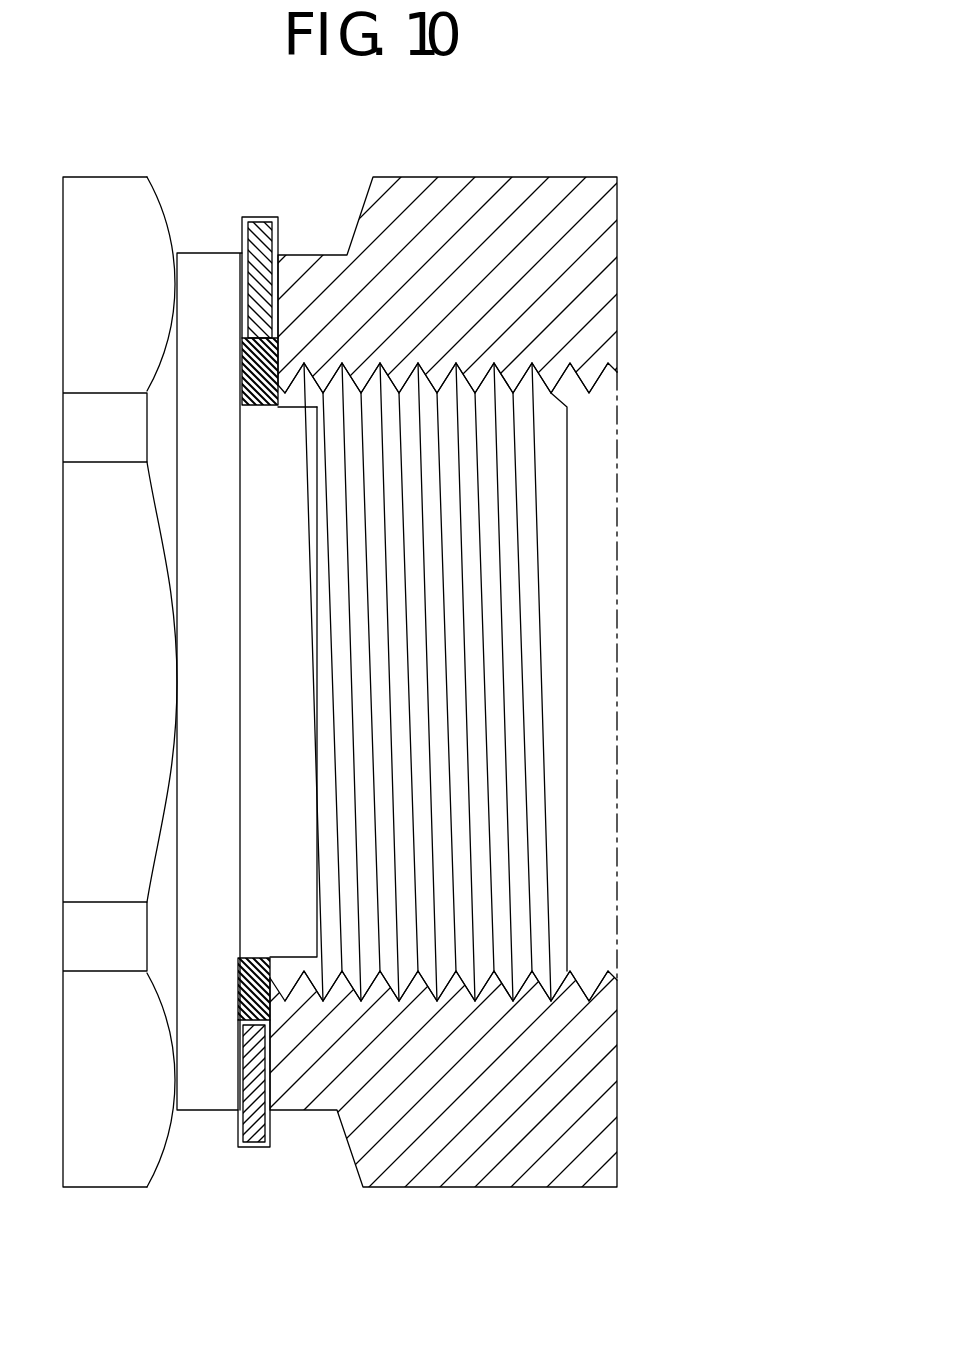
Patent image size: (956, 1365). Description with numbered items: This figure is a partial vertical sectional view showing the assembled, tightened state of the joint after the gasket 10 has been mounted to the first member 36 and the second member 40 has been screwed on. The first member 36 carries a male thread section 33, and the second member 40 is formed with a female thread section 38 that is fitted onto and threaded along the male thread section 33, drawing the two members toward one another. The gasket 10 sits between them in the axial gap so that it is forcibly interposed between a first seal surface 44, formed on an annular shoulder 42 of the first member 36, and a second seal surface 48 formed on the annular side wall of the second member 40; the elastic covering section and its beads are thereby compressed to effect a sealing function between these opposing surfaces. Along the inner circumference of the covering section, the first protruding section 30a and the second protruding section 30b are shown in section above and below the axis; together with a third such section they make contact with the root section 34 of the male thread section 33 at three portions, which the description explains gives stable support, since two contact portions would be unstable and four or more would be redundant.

The gasket 10 is at (281, 231).
The first protruding section 30a is at (278, 362).
The second protruding section 30b is at (252, 958).
The male thread section 33 is at (475, 1005).
The root section 34 is at (303, 404).
The first member 36 is at (101, 1190).
The female thread section 38 is at (480, 393).
The second member 40 is at (572, 175).
The annular shoulder 42 is at (204, 1100).
The first seal surface 44 is at (270, 1074).
The second seal surface 48 is at (268, 324).